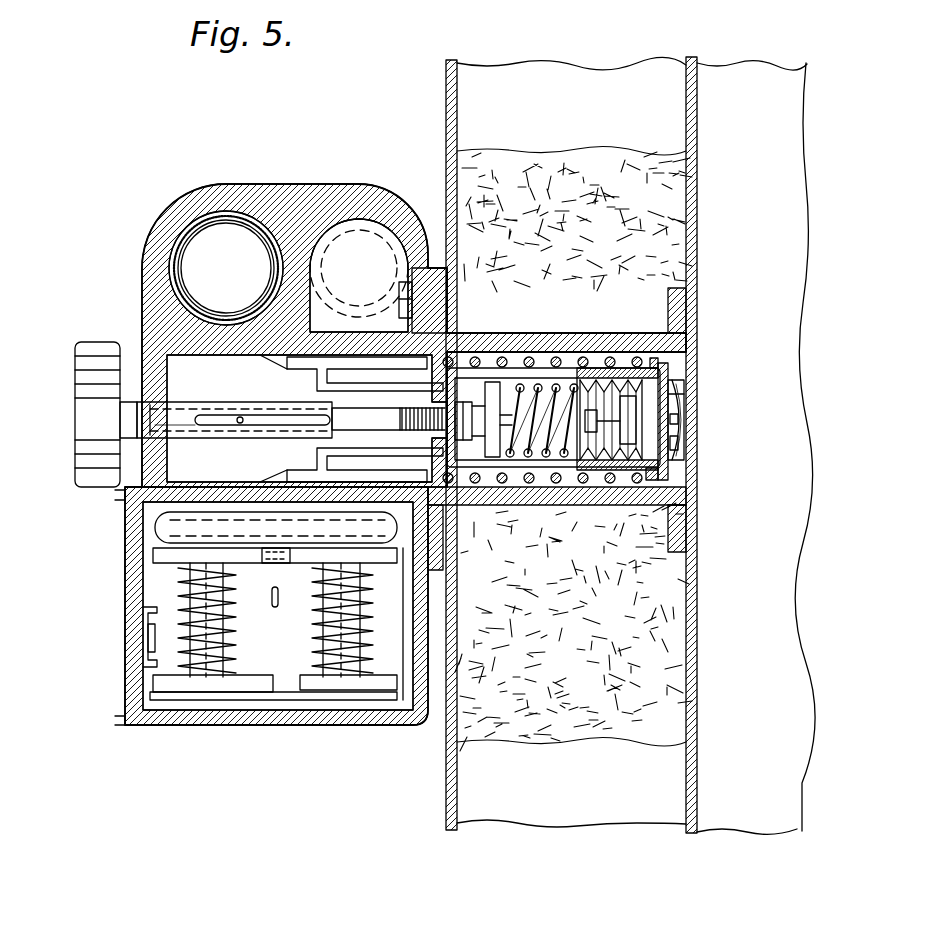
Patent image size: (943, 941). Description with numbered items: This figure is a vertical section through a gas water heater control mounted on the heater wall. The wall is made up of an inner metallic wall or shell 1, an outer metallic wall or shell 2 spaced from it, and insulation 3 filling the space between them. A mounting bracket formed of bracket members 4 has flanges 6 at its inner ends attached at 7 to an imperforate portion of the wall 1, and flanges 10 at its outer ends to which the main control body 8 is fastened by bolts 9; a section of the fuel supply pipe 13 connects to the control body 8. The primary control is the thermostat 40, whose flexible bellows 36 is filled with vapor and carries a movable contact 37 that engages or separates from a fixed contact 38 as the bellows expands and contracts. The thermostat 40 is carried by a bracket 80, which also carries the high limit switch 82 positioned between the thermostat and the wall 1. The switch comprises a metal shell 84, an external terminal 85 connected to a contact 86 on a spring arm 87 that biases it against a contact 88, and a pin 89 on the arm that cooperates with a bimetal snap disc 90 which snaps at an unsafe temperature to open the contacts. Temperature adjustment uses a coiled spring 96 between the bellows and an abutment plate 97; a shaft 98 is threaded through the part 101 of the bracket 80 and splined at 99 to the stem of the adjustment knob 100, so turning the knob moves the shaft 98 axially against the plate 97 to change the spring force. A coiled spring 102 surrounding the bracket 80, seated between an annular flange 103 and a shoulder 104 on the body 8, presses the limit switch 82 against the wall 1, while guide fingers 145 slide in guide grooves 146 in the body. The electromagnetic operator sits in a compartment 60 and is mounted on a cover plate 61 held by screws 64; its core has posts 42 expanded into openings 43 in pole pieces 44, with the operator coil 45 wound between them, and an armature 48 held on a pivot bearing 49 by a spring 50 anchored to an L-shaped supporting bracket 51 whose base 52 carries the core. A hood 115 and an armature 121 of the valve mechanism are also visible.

The inner metallic wall or shell 1 is at (722, 62).
The outer metallic wall or shell 2 is at (446, 97).
The insulation 3 is at (582, 151).
The bracket members 4 is at (597, 471).
The flanges 6 is at (690, 292).
The attachment 7 is at (690, 309).
The main control body 8 is at (268, 172).
The bolts 9 is at (404, 287).
The flanges 10 is at (446, 275).
The fuel supply pipe 13 is at (342, 220).
The flexible bellows 36 is at (550, 386).
The contact 37 is at (555, 460).
The contact 38 is at (600, 468).
The thermostat 40 is at (608, 368).
The posts 42 is at (206, 665).
The openings 43 is at (150, 572).
The pole pieces 44 is at (160, 552).
The operator coil 45 is at (321, 649).
The armature 48 is at (170, 533).
The pivot bearing 49 is at (258, 512).
The spring 50 is at (272, 597).
The L-shaped supporting bracket 51 is at (178, 517).
The horizontal arm or base 52 is at (274, 704).
The chamber or compartment 60 is at (154, 584).
The cover plate 61 is at (136, 636).
The screws 64 is at (116, 496).
The bracket 80 is at (530, 378).
The high limit switch 82 is at (686, 452).
The metal shell 84 is at (675, 374).
The terminal 85 is at (626, 378).
The contact 86 is at (630, 472).
The spring arm 87 is at (678, 438).
The contact 88 is at (660, 474).
The pin 89 is at (678, 418).
The bimetal thermostat snap disc 90 is at (684, 395).
The coiled spring 96 is at (508, 460).
The abutment plate 97 is at (480, 460).
The shaft 98 is at (348, 410).
The splined connection 99 is at (238, 418).
The temperature selecting or adjustment knob 100 is at (94, 340).
The part of the bracket 101 is at (465, 440).
The coiled spring 102 is at (502, 358).
The annular flange 103 is at (656, 358).
The shoulder 104 is at (456, 366).
The hood 115 is at (205, 227).
The armature 121 is at (190, 258).
The guide fingers 145 is at (289, 364).
The guide grooves 146 is at (345, 355).